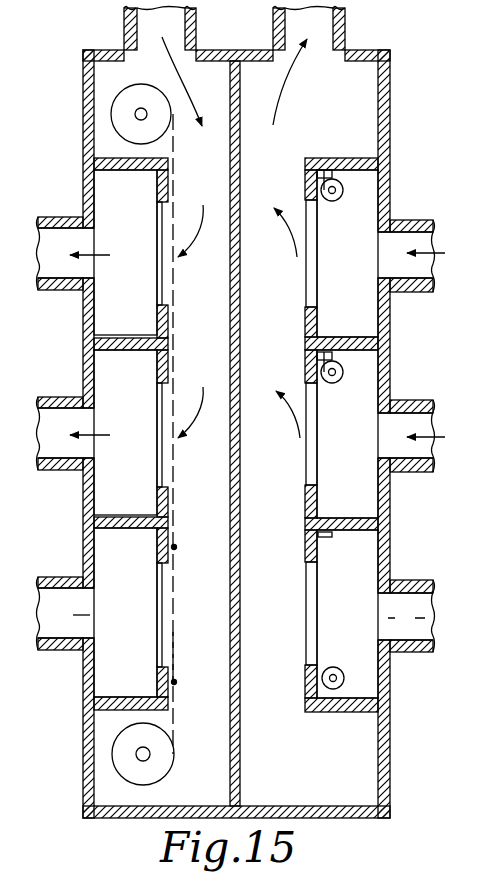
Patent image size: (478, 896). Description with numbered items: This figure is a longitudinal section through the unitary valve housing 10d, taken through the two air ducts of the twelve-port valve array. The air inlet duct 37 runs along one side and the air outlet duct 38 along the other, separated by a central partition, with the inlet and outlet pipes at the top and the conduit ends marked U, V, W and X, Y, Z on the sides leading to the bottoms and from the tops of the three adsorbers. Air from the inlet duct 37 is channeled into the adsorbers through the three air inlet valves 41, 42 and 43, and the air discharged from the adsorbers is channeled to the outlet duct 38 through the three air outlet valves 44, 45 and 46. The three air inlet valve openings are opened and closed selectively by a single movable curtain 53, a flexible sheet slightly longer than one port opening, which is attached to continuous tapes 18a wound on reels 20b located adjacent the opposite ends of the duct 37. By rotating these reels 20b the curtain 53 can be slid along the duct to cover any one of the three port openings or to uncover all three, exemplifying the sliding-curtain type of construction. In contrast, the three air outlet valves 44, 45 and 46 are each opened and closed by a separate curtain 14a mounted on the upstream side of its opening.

The valve housing 10d is at (390, 90).
The air inlet duct 37 is at (220, 90).
The air outlet duct 38 is at (350, 90).
The reels 20b is at (145, 84).
The continuous tapes 18a is at (176, 505).
The movable curtain 53 is at (177, 632).
The air inlet valve 41 is at (160, 226).
The air inlet valve 42 is at (162, 410).
The air inlet valve 43 is at (162, 609).
The air outlet valve 44 is at (310, 272).
The air outlet valve 45 is at (310, 460).
The air outlet valve 46 is at (310, 617).
The curtains 14a is at (318, 176).